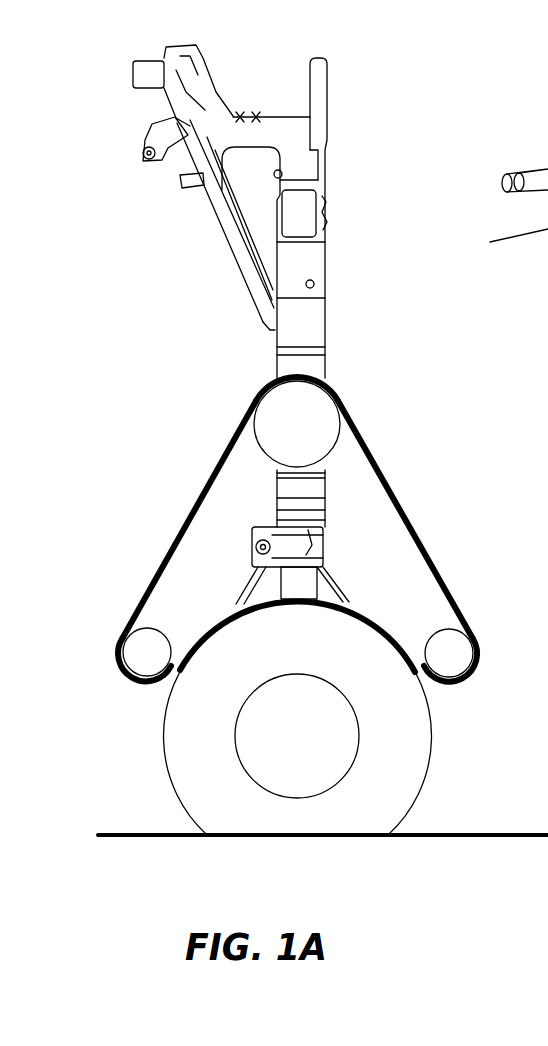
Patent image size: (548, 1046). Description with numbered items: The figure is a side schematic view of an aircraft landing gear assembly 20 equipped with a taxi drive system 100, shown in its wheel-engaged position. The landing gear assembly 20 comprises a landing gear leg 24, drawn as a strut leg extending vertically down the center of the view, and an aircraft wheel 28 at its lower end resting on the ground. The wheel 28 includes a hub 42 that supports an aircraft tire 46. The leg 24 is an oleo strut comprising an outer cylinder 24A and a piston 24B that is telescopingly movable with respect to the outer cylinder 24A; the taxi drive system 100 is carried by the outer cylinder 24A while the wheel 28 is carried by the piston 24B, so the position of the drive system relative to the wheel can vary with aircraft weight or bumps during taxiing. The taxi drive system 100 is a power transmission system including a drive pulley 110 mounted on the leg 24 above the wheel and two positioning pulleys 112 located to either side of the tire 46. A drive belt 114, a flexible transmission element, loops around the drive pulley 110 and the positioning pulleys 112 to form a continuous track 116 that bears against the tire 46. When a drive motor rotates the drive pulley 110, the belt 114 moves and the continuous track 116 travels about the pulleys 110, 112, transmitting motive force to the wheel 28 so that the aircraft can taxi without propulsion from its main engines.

The aircraft landing gear assembly 20 is at (336, 206).
The landing gear leg 24 is at (366, 331).
The outer cylinder 24A is at (307, 490).
The piston 24B is at (305, 583).
The aircraft wheel 28 is at (146, 795).
The hub 42 is at (256, 727).
The aircraft tire 46 is at (417, 752).
The taxi drive system 100 is at (297, 501).
The drive pulley 110 is at (274, 406).
The positioning pulley 112 is at (137, 647).
The drive belt 114 is at (199, 500).
The continuous track 116 is at (420, 520).